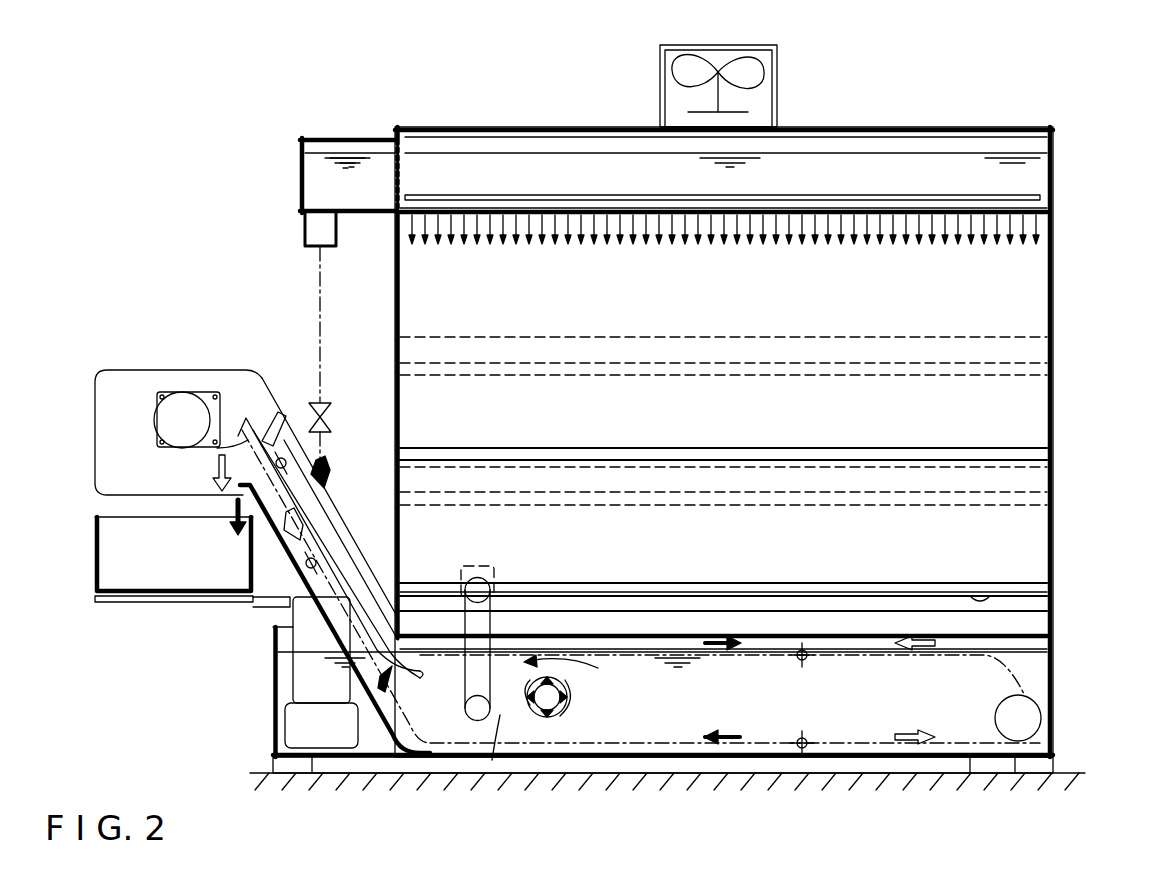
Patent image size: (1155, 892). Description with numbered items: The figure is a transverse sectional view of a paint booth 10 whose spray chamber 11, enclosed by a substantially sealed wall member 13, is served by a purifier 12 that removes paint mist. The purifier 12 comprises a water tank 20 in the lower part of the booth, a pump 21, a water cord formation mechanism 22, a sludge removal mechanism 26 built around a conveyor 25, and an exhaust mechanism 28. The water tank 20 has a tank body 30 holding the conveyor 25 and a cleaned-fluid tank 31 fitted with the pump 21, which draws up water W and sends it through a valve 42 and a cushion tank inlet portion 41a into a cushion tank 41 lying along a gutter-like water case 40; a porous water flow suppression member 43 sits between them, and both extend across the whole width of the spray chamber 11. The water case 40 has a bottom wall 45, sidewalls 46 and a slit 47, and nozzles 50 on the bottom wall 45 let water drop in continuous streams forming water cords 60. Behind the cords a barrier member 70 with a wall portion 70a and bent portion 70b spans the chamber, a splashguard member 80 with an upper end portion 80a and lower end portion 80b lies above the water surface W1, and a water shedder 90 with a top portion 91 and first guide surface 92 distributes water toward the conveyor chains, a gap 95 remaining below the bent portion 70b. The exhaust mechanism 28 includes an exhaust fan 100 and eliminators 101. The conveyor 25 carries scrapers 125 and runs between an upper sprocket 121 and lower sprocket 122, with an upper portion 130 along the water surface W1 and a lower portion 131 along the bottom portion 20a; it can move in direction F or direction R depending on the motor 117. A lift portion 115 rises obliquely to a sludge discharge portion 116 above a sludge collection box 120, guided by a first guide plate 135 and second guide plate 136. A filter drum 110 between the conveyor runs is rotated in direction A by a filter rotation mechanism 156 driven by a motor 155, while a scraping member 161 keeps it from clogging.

The paint booth 10 is at (557, 122).
The spray chamber 11 is at (723, 440).
The purifier 12 is at (940, 160).
The wall member 13 is at (1015, 298).
The water tank 20 is at (636, 778).
The bottom portion of the water tank 20a is at (690, 758).
The pump 21 is at (290, 698).
The water cord formation mechanism 22 is at (985, 262).
The conveyor 25 is at (1018, 665).
The sludge removal mechanism 26 is at (575, 636).
The exhaust mechanism 28 is at (790, 57).
The tank body 30 is at (970, 773).
The cleaned-fluid tank 31 is at (376, 757).
The water case 40 is at (1030, 172).
The cushion tank 41 is at (300, 190).
The cushion tank inlet portion 41a is at (303, 237).
The valve 42 is at (332, 417).
The water flow suppression member 43 is at (397, 150).
The bottom wall 45 is at (1035, 210).
The sidewall 46 is at (603, 145).
The slit 47 is at (470, 195).
The nozzles 50 is at (1050, 216).
The water cords 60 is at (1040, 232).
The barrier member 70 is at (990, 415).
The wall portion 70a is at (1018, 325).
The bent portion 70b is at (1040, 583).
The splashguard member 80 is at (990, 520).
The upper end portion 80a is at (793, 448).
The lower end portion 80b is at (797, 583).
The water shedder 90 is at (1020, 614).
The top portion 91 is at (822, 596).
The first guide surface 92 is at (875, 611).
The gap 95 is at (982, 594).
The exhaust fan 100 is at (760, 84).
The eliminators 101 is at (578, 338).
The filter drum 110 is at (565, 712).
The lift portion 115 is at (262, 582).
The sludge discharge portion 116 is at (232, 496).
The motor 117 is at (183, 392).
The sludge collection box 120 is at (95, 560).
The upper sprocket 121 is at (160, 410).
The lower sprocket 122 is at (1035, 725).
The scrapers 125 is at (806, 657).
The upper portion 130 is at (762, 657).
The lower portion 131 is at (766, 743).
The first guide plate 135 is at (345, 590).
The second guide plate 136 is at (293, 606).
The motor 155 is at (495, 575).
The filter rotation mechanism 156 is at (455, 614).
The scraping member 161 is at (492, 760).
The water W is at (890, 150).
The water surface W1 is at (655, 652).
The arrow A is at (570, 671).
The arrow R is at (730, 638).
The arrow F is at (920, 637).